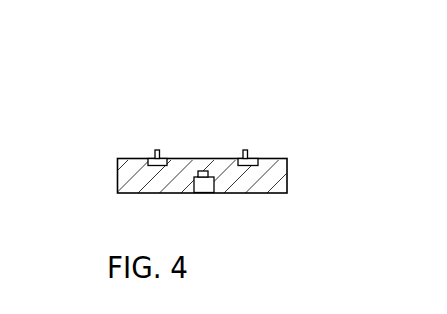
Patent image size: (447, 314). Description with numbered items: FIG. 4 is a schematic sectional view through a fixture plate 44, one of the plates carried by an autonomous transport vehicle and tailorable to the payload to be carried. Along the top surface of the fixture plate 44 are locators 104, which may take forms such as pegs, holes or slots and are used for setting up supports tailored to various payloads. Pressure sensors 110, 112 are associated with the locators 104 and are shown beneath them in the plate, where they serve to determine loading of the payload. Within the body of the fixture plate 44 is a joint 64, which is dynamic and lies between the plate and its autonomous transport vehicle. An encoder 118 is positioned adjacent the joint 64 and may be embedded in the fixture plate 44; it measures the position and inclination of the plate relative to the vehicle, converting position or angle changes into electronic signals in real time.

The fixture plate 44 is at (187, 158).
The locator 104 is at (154, 150).
The pressure sensor 110 is at (148, 160).
The pressure sensor 112 is at (257, 163).
The encoder 118 is at (208, 173).
The joint 64 is at (213, 193).